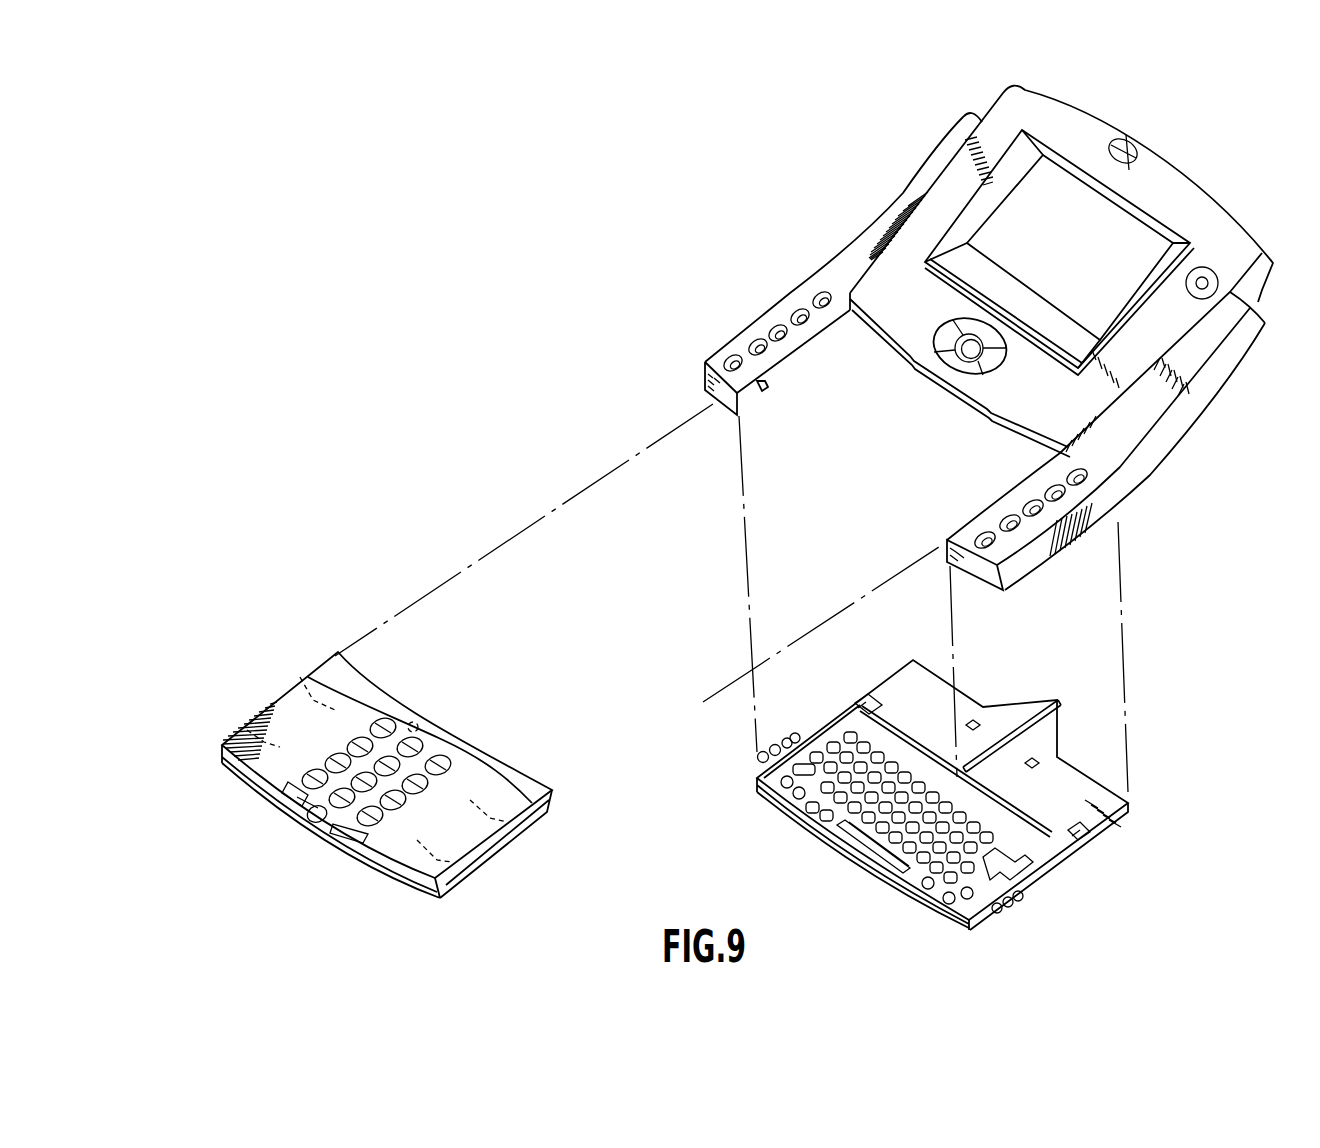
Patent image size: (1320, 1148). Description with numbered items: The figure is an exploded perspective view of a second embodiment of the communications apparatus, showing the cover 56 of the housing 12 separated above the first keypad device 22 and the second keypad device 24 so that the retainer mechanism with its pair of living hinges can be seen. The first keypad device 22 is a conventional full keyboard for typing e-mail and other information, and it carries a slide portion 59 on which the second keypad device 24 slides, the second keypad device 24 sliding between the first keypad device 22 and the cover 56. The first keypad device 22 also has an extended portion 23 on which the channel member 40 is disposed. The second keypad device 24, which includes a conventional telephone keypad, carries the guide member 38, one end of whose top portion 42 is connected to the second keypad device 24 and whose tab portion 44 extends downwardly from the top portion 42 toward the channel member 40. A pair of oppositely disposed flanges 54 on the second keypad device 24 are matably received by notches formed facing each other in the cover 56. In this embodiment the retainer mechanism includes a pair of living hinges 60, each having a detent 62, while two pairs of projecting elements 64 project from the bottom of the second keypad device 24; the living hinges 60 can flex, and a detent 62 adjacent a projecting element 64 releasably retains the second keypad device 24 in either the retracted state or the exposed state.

The housing 12 is at (1200, 432).
The cover 56 is at (1092, 523).
The first keypad device 22 is at (1047, 873).
The extended portion 23 is at (1058, 768).
The channel member 40 is at (1060, 718).
The slide portion 59 is at (825, 722).
The living hinge 60 is at (887, 700).
The detent 62 is at (860, 703).
The second keypad device 24 is at (277, 701).
The guide member 38 is at (420, 733).
The top portion 42 is at (400, 698).
The tab portion 44 is at (438, 711).
The flange 54 is at (485, 860).
The projecting element 64 is at (300, 677).